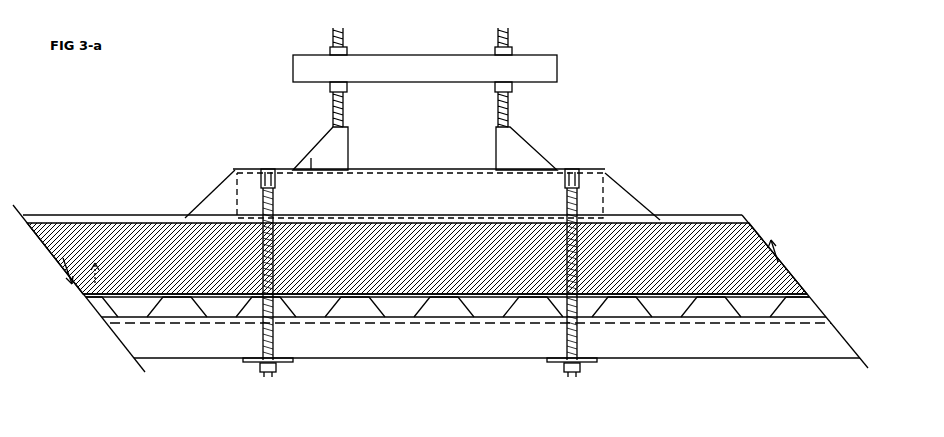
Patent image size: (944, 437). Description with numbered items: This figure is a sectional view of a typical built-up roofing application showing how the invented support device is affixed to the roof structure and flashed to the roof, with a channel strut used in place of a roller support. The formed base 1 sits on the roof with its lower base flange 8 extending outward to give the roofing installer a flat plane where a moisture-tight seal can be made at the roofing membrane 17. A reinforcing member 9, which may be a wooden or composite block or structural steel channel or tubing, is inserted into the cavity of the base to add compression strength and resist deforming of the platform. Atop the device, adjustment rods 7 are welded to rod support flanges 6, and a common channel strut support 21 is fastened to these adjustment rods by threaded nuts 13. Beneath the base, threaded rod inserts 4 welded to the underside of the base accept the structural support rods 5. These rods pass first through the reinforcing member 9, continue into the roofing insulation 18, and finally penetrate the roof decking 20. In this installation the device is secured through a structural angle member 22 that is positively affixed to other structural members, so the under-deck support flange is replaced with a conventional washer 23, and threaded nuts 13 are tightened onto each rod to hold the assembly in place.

The formed base 1 is at (308, 167).
The threaded rod insert 4 is at (262, 178).
The structural support rod 5 is at (258, 205).
The rod support flange 6 is at (508, 152).
The adjustment rod 7 is at (493, 118).
The base flange 8 is at (657, 218).
The reinforcing member 9 is at (594, 205).
The threaded nut 13 is at (330, 75).
The roofing membrane 17 is at (672, 218).
The roofing insulation 18 is at (142, 258).
The roof decking 20 is at (338, 300).
The channel strut support 21 is at (533, 65).
The structural angle member 22 is at (667, 342).
The washer 23 is at (258, 368).